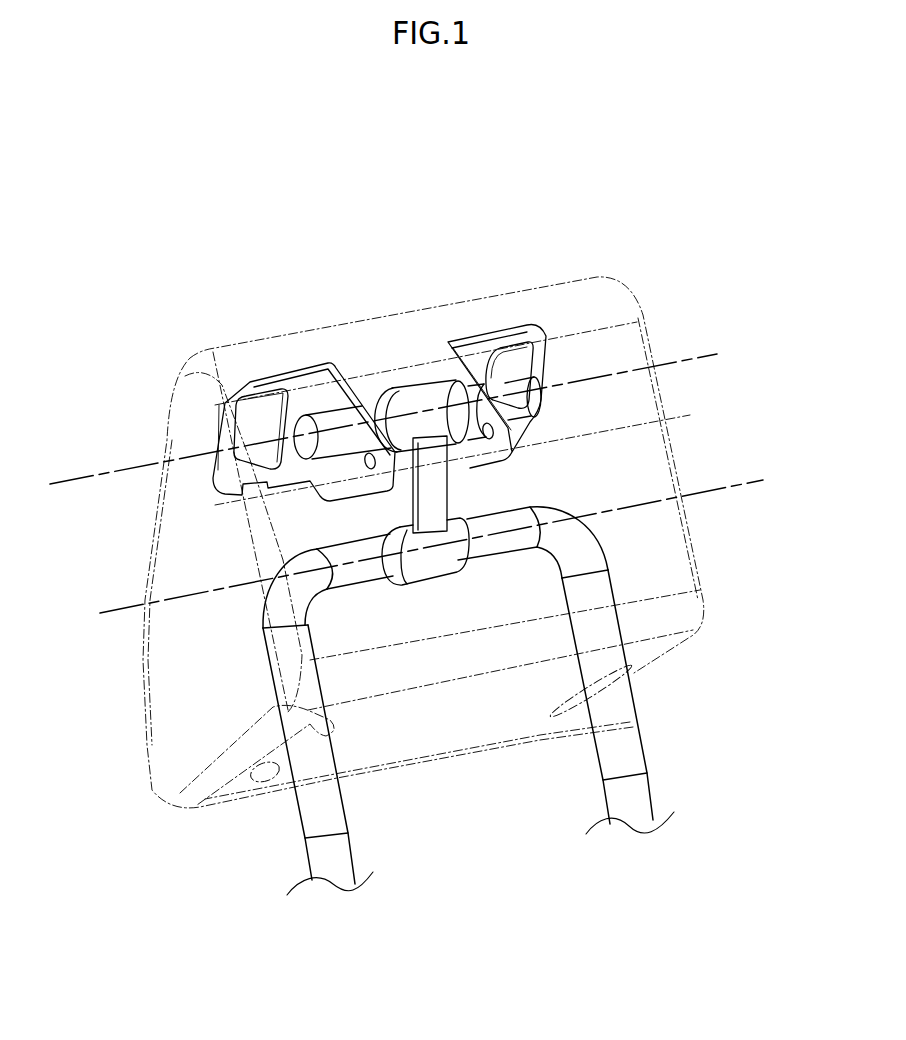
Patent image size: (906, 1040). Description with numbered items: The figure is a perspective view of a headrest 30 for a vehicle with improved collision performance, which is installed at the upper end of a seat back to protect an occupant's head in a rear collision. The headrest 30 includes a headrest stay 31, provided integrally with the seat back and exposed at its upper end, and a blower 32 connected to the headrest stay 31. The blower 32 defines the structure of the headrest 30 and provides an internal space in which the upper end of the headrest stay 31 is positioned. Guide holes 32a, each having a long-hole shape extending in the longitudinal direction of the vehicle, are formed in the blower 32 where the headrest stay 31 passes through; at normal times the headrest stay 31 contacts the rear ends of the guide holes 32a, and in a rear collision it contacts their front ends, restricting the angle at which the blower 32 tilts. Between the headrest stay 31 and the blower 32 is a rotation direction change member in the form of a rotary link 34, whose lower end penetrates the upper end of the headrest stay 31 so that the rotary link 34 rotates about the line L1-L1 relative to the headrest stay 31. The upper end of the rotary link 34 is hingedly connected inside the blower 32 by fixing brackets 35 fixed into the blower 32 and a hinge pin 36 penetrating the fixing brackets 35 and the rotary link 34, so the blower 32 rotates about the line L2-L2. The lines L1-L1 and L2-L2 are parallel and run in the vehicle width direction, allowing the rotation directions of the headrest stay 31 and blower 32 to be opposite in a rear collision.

The headrest 30 is at (692, 179).
The headrest stay 31 is at (626, 752).
The blower 32 is at (186, 556).
The guide holes 32a is at (282, 786).
The rotary link 34 is at (430, 486).
The fixing brackets 35 is at (310, 396).
The hinge pin 36 is at (503, 412).
The line L1- L1 is at (437, 548).
The line L2- L2 is at (388, 422).